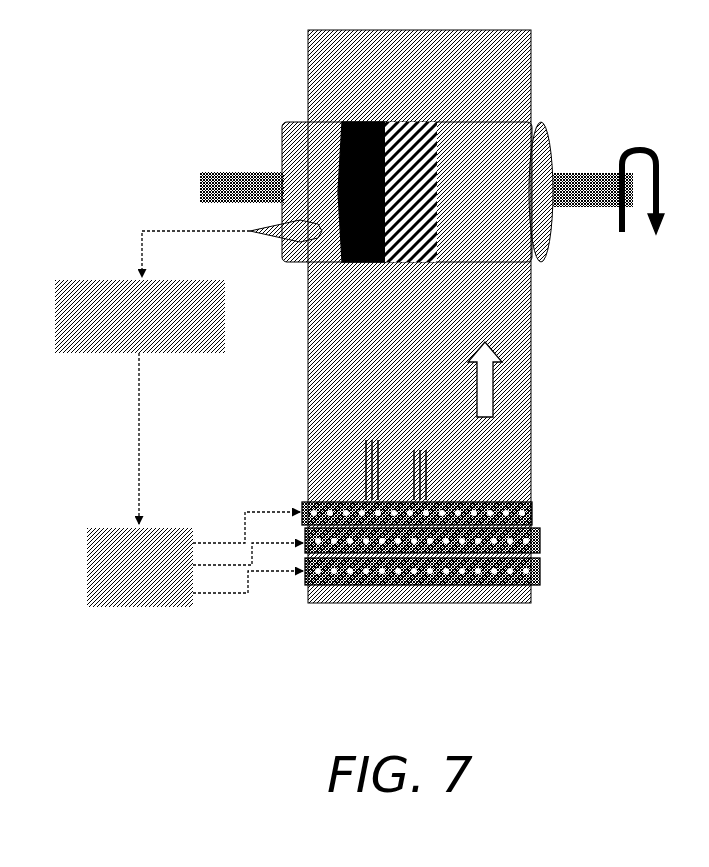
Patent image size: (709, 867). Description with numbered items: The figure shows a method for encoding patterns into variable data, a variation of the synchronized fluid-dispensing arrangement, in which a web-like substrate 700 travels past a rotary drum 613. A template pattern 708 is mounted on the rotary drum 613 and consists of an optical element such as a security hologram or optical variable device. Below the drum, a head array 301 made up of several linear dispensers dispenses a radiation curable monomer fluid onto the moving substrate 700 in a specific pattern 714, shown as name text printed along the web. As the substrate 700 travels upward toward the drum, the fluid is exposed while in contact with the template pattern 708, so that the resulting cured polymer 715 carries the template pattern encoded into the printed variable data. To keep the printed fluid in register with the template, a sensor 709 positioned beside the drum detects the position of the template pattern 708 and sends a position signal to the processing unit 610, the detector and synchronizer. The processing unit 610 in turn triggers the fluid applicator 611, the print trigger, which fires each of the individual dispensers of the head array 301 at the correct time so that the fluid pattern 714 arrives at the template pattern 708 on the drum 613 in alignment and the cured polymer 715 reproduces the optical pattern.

The web substrate 700 is at (535, 462).
The cured polymer 715 is at (346, 78).
The specific pattern 714 is at (360, 328).
The template pattern 708 is at (438, 215).
The rotary drum 613 is at (560, 222).
The sensor 709 is at (260, 222).
The processing unit 610 is at (158, 358).
The fluid applicator 611 is at (150, 524).
The head array 301 is at (537, 517).